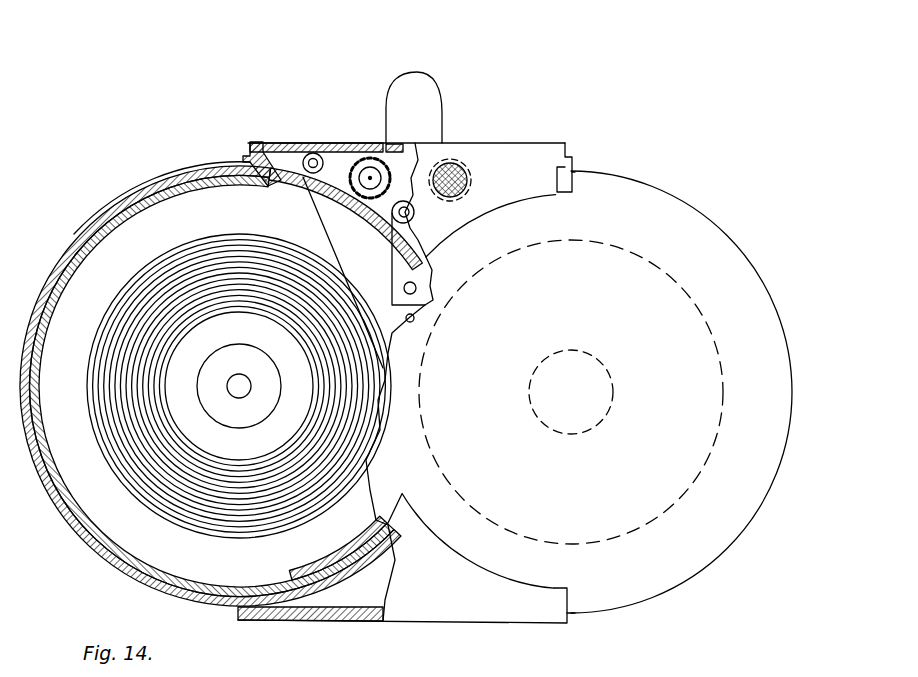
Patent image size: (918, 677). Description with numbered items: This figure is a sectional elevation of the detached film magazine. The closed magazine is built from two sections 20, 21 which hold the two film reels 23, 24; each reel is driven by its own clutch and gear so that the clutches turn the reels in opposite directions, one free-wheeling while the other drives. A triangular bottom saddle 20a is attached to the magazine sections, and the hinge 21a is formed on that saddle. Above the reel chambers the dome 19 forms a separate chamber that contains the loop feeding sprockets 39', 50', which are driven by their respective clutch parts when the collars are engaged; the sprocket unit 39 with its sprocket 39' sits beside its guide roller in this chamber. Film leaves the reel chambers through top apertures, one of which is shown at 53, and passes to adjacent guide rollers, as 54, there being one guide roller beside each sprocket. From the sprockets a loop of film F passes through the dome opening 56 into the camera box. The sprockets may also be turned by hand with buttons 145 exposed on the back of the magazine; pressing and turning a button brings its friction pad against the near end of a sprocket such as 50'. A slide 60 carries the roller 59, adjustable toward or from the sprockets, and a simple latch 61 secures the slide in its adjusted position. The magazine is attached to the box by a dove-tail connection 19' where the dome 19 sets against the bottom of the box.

The magazine section 20 is at (183, 172).
The triangular bottom saddle 20a is at (467, 613).
The magazine section 21 is at (658, 197).
The hinge 21a is at (317, 612).
The reel 23 is at (665, 517).
The reel 24 is at (237, 542).
The dome 19 is at (406, 132).
The dove-tail connection 19' is at (419, 152).
The arm 39 is at (343, 272).
The loop feeding sprocket 39' is at (365, 133).
The top aperture 53 is at (305, 183).
The guide roller 54 is at (301, 148).
The dome opening 56 is at (397, 148).
The film loop F is at (435, 86).
The loop feeding sprocket 50' is at (465, 159).
The button 145 is at (467, 177).
The roller 59 is at (425, 214).
The slide 60 is at (397, 262).
The latch 61 is at (405, 287).